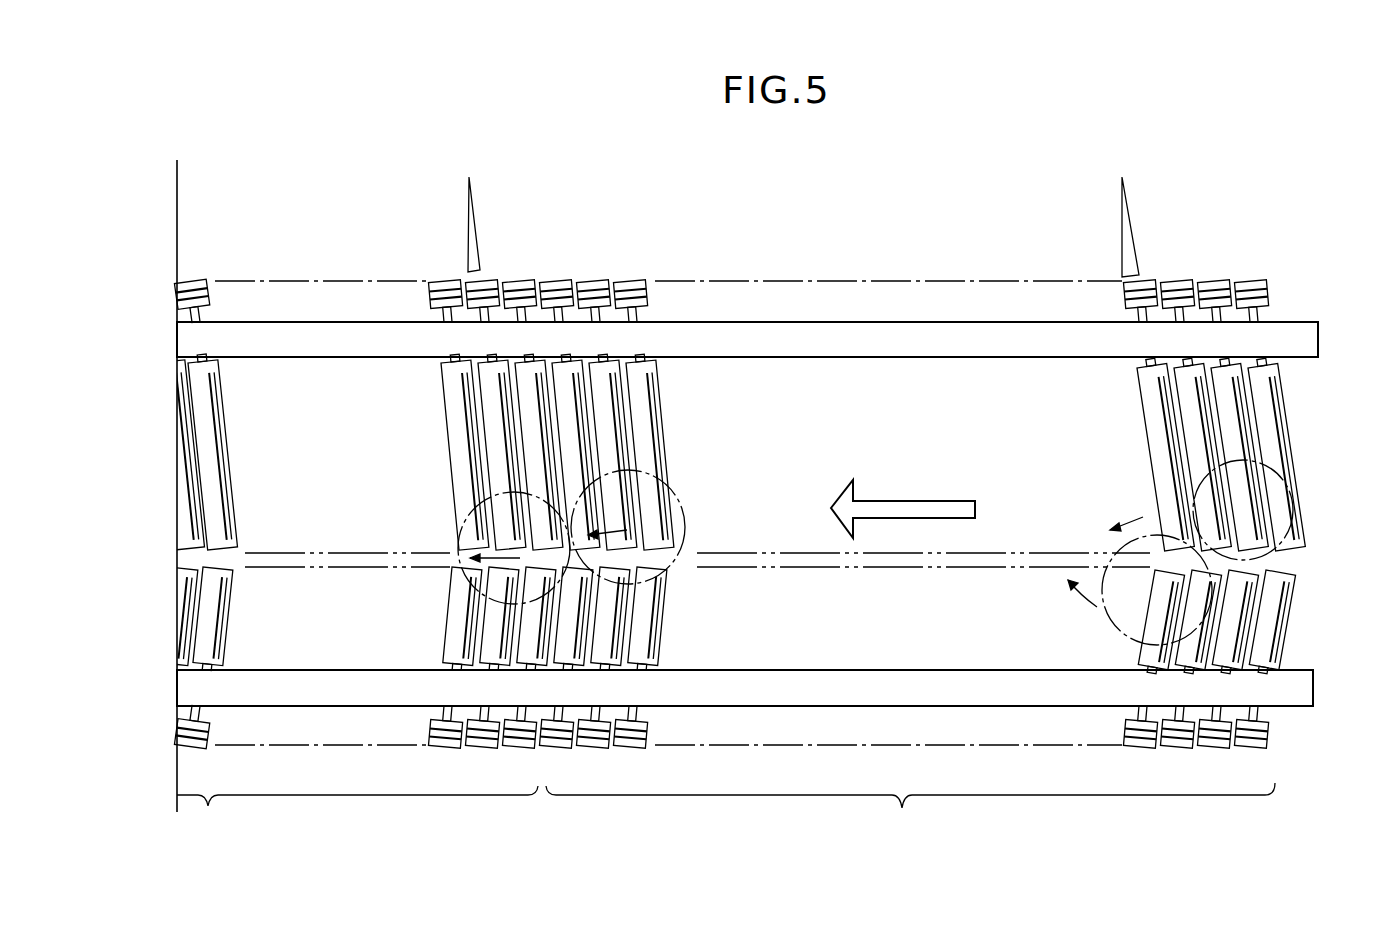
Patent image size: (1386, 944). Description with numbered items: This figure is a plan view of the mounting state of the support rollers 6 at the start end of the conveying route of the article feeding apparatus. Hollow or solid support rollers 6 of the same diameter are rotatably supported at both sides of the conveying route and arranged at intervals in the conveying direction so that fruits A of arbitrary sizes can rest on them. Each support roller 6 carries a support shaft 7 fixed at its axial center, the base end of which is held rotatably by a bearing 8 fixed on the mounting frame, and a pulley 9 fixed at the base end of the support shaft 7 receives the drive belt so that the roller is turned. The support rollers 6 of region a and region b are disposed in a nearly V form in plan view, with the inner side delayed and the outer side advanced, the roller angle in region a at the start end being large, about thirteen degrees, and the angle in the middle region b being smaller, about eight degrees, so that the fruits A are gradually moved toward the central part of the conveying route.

The support roller 6 is at (232, 510).
The support shaft 7 is at (1265, 314).
The bearing 8 is at (1318, 340).
The pulley 9 is at (1253, 284).
The fruit A is at (600, 470).
The region a is at (910, 821).
The region b is at (357, 821).